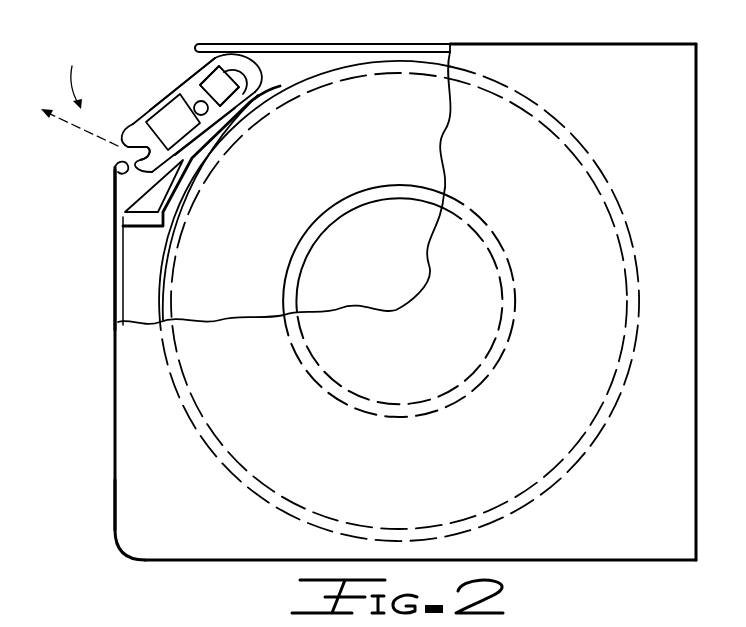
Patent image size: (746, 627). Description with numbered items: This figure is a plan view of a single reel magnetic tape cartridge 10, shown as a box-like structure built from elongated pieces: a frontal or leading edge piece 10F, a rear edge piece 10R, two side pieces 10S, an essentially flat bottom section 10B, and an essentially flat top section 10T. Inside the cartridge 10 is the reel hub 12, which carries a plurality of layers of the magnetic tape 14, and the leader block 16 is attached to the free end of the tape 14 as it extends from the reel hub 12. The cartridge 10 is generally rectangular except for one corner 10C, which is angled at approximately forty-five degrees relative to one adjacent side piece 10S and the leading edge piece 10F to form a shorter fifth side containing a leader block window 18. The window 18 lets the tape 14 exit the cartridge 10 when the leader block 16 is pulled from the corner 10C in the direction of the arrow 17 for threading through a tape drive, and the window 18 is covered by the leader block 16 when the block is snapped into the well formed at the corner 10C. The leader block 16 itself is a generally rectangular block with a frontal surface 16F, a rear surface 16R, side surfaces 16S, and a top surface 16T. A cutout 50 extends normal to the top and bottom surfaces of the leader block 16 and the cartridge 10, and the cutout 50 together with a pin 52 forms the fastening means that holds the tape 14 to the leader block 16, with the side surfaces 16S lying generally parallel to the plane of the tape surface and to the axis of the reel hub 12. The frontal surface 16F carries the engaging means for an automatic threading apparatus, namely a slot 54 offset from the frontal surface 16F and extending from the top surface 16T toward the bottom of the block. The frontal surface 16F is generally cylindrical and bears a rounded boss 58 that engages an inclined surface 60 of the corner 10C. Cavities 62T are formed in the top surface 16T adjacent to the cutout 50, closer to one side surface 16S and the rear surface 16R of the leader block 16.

The cartridge 10 is at (400, 305).
The bottom section 10B is at (133, 293).
The corner 10C is at (80, 76).
The frontal or leading edge piece 10F is at (115, 393).
The rear edge piece 10R is at (697, 432).
The side pieces 10S is at (417, 44).
The top section 10T is at (130, 480).
The reel hub 12 is at (395, 158).
The magnetic tape 14 is at (252, 108).
The leader block 16 is at (190, 116).
The frontal surface 16F is at (153, 208).
The rear surface 16R is at (250, 66).
The side surfaces 16S is at (189, 70).
The top surface 16T is at (133, 131).
The arrow 17 is at (78, 130).
The leader block window 18 is at (210, 140).
The cutout 50 is at (209, 112).
The pin 52 is at (231, 80).
The slot 54 is at (133, 148).
The rounded boss 58 is at (120, 186).
The inclined surface 60 is at (113, 162).
The cavities 62T is at (203, 76).